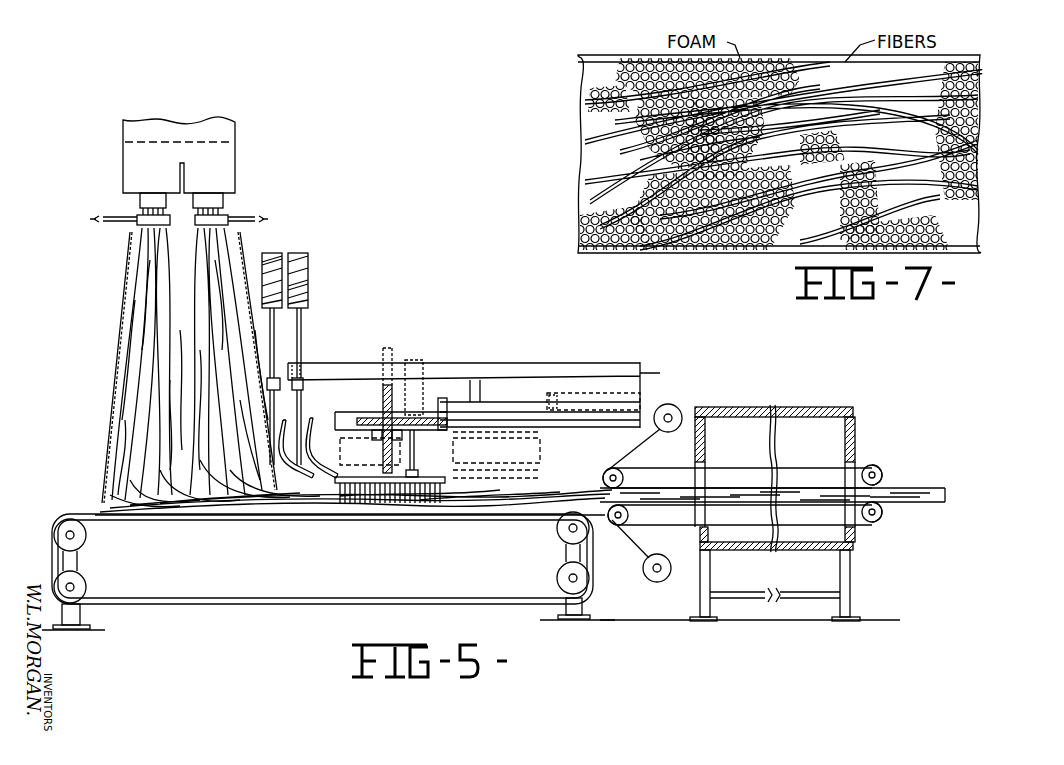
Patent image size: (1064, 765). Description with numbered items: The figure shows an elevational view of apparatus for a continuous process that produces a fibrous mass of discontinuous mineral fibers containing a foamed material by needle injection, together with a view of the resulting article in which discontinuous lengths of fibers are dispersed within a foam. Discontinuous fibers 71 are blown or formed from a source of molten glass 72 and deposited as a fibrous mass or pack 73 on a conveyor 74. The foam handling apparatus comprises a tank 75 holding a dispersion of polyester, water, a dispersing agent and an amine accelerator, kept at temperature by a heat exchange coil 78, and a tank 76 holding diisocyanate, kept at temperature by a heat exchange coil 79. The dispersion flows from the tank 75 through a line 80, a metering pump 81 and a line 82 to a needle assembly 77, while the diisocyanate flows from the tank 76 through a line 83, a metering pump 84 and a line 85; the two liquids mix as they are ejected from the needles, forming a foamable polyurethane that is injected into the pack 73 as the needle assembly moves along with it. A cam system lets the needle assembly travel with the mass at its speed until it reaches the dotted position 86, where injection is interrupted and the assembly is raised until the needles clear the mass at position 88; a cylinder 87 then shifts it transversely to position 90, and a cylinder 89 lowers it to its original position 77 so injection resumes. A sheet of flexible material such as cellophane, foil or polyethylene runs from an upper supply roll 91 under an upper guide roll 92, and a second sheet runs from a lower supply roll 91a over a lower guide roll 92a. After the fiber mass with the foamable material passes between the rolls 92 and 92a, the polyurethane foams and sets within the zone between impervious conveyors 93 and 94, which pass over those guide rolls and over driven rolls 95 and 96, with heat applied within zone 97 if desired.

The discontinuous fibers 71 is at (143, 375).
The source of molten glass 72 is at (237, 128).
The fibrous mass or pack 73 is at (246, 520).
The conveyor 74 is at (148, 520).
The tank 75 is at (278, 255).
The tank 76 is at (306, 256).
The needle assembly 77 is at (355, 500).
The heat exchange coil 78 is at (264, 268).
The heat exchange coil 79 is at (308, 292).
The line 80 is at (273, 326).
The metering pump 81 is at (268, 386).
The line 82 is at (273, 433).
The line 83 is at (300, 340).
The metering pump 84 is at (293, 389).
The line 85 is at (299, 404).
The position 86 is at (540, 476).
The cylinder 87 is at (573, 393).
The position 88 is at (540, 450).
The cylinder 89 is at (410, 366).
The position 90 is at (341, 452).
The upper supply roll 91 is at (667, 405).
The lower supply roll 91a is at (653, 581).
The upper guide roll 92 is at (611, 467).
The lower guide roll 92a is at (621, 520).
The impervious conveyor 93 is at (816, 448).
The impervious conveyor 94 is at (793, 503).
The driven roll 95 is at (882, 471).
The driven roll 96 is at (873, 522).
The zone 97 is at (836, 407).